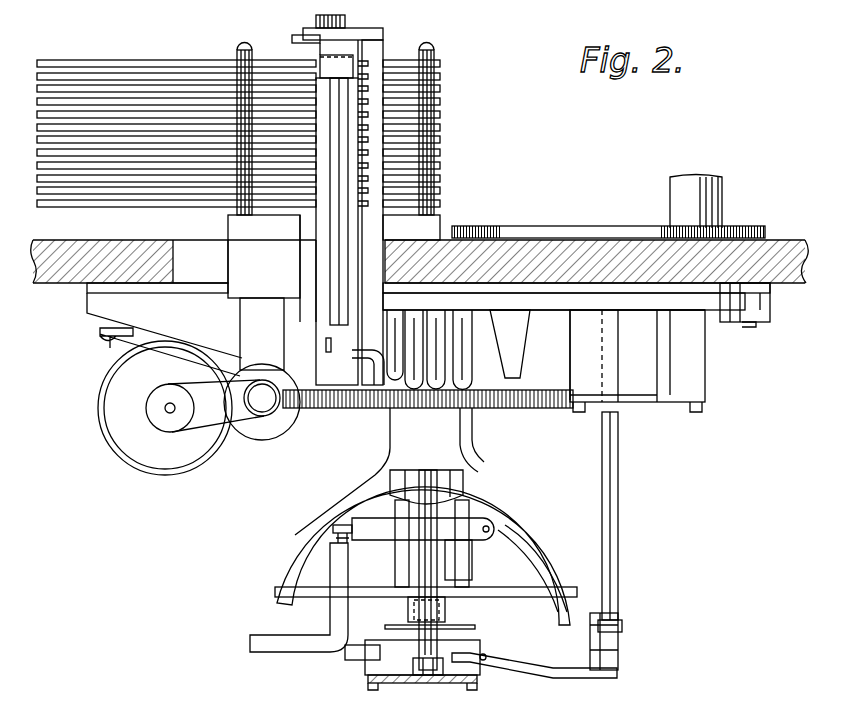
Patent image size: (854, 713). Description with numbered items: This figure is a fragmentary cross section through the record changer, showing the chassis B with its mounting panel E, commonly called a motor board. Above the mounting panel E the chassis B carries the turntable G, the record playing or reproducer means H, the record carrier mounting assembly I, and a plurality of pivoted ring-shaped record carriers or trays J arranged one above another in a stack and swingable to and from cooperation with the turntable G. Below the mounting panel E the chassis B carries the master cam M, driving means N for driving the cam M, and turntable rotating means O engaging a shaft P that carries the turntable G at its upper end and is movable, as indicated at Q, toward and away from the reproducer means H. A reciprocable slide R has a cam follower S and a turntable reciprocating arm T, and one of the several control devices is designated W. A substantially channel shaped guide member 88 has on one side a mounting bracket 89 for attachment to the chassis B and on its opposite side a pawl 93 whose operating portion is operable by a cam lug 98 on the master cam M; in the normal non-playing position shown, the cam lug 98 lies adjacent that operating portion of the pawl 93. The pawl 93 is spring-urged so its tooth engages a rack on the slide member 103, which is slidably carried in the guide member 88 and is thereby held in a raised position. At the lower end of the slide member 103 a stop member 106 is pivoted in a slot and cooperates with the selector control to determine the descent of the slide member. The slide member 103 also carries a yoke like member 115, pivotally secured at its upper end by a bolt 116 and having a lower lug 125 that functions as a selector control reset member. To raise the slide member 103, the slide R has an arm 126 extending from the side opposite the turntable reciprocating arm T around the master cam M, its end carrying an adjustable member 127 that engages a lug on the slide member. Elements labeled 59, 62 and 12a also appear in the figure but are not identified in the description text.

The record carriers J is at (104, 90).
The record carrier mounting assembly I is at (446, 126).
The guide post 59 is at (438, 190).
The top plate 62 is at (437, 14).
The slide member 103 is at (317, 57).
The guide member 88 is at (328, 190).
The mounting bracket 89 is at (338, 266).
The housing 12a is at (298, 238).
The stop member 106 is at (326, 346).
The control device W is at (187, 242).
The mounting panel E is at (772, 285).
The turntable G is at (524, 228).
The reproducer means H is at (722, 185).
The chassis B is at (84, 313).
The lower lug 125 is at (290, 375).
The driving means N is at (254, 440).
The cam lug 98 is at (385, 374).
The pawl 93 is at (364, 387).
The turntable rotating means O is at (705, 396).
The direction of shaft movement Q is at (620, 494).
The master cam M is at (293, 531).
The yoke like member 115 is at (440, 481).
The reciprocable slide R is at (447, 565).
The adjustable member 127 is at (338, 524).
The arm 126 is at (293, 650).
The cam follower S is at (447, 614).
The bolt 116 is at (450, 628).
The turntable reciprocating arm T is at (550, 676).
The shaft P is at (618, 607).